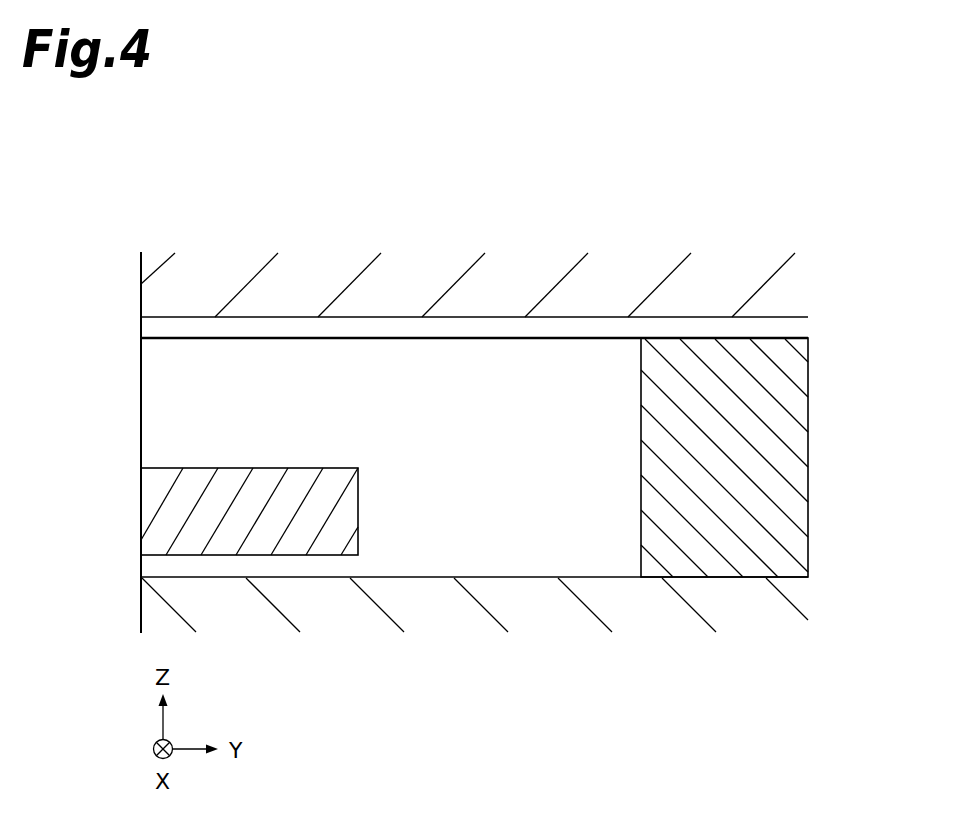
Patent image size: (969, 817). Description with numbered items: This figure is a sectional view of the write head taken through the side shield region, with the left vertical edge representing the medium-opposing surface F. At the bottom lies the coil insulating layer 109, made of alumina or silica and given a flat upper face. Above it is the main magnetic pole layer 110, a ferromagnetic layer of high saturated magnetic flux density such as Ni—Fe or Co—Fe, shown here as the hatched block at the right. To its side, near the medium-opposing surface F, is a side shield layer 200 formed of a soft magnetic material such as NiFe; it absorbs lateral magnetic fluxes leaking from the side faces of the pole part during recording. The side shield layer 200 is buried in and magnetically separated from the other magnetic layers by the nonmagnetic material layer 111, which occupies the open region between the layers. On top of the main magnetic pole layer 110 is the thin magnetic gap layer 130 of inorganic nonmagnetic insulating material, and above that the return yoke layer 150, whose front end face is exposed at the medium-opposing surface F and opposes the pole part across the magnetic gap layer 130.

The medium-opposing surface F is at (131, 256).
The return yoke layer 150 is at (195, 293).
The magnetic gap layer 130 is at (195, 326).
The nonmagnetic material layer 111 is at (192, 401).
The side shield layer 200 is at (197, 515).
The main magnetic pole layer 110 is at (742, 435).
The coil insulating layer 109 is at (163, 625).